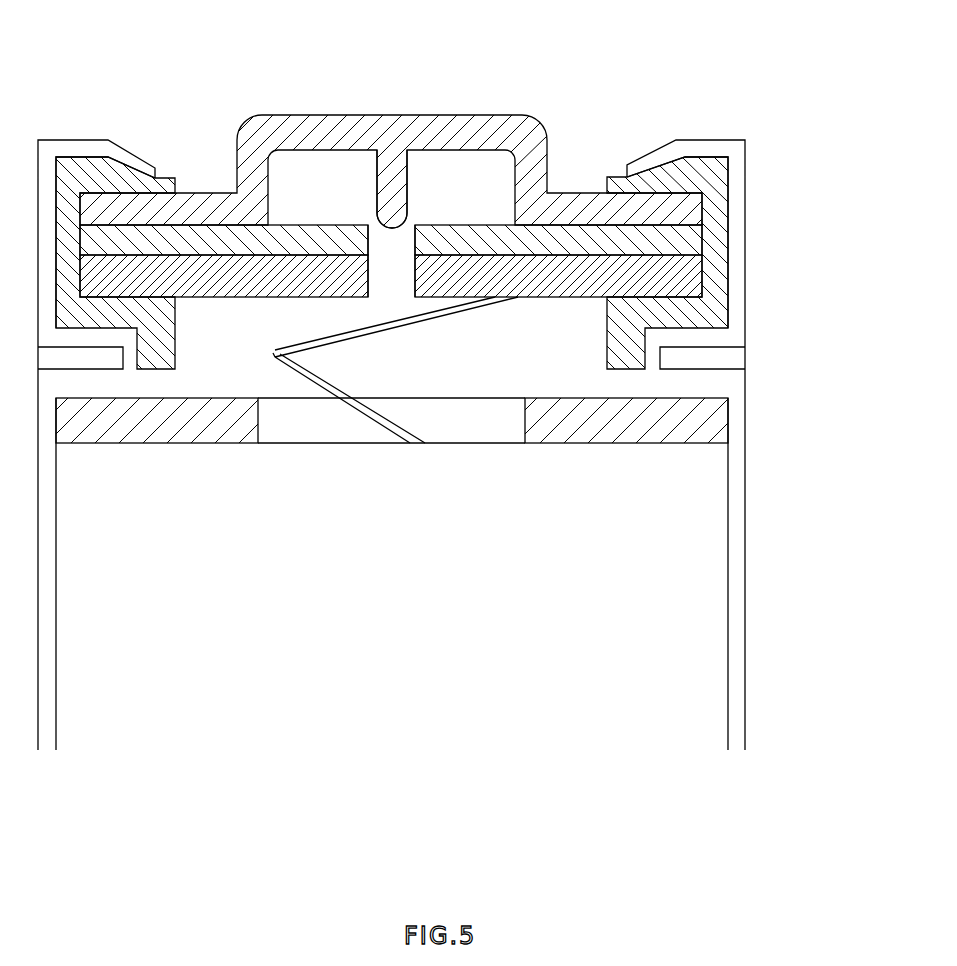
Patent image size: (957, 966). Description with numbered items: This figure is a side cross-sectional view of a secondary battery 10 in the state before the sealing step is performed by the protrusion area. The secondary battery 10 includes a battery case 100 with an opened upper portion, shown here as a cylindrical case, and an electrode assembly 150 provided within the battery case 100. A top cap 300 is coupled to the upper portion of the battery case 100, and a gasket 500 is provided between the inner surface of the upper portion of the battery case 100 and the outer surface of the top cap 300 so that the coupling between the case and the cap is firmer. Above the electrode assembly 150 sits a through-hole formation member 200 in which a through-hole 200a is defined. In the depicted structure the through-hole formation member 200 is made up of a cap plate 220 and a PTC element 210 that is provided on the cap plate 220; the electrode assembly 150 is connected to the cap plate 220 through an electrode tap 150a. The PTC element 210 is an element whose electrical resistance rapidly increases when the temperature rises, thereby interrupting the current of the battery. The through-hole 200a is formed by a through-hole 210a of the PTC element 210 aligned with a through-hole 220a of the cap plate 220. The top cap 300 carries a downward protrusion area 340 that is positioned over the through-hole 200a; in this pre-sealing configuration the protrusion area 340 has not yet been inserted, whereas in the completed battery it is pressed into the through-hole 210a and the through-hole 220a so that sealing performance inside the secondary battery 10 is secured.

The secondary battery 10 is at (464, 382).
The battery case 100 is at (738, 658).
The electrode assembly 150 is at (710, 543).
The electrode tap 150a is at (378, 422).
The through-hole formation member 200 is at (485, 309).
The through-hole 200a is at (470, 309).
The PTC element 210 is at (697, 237).
The through-hole of the PTC element 210a is at (430, 230).
The cap plate 220 is at (697, 272).
The through-hole of the cap plate 220a is at (393, 280).
The top cap 300 is at (352, 114).
The protrusion area 340 is at (412, 182).
The gasket 500 is at (688, 172).